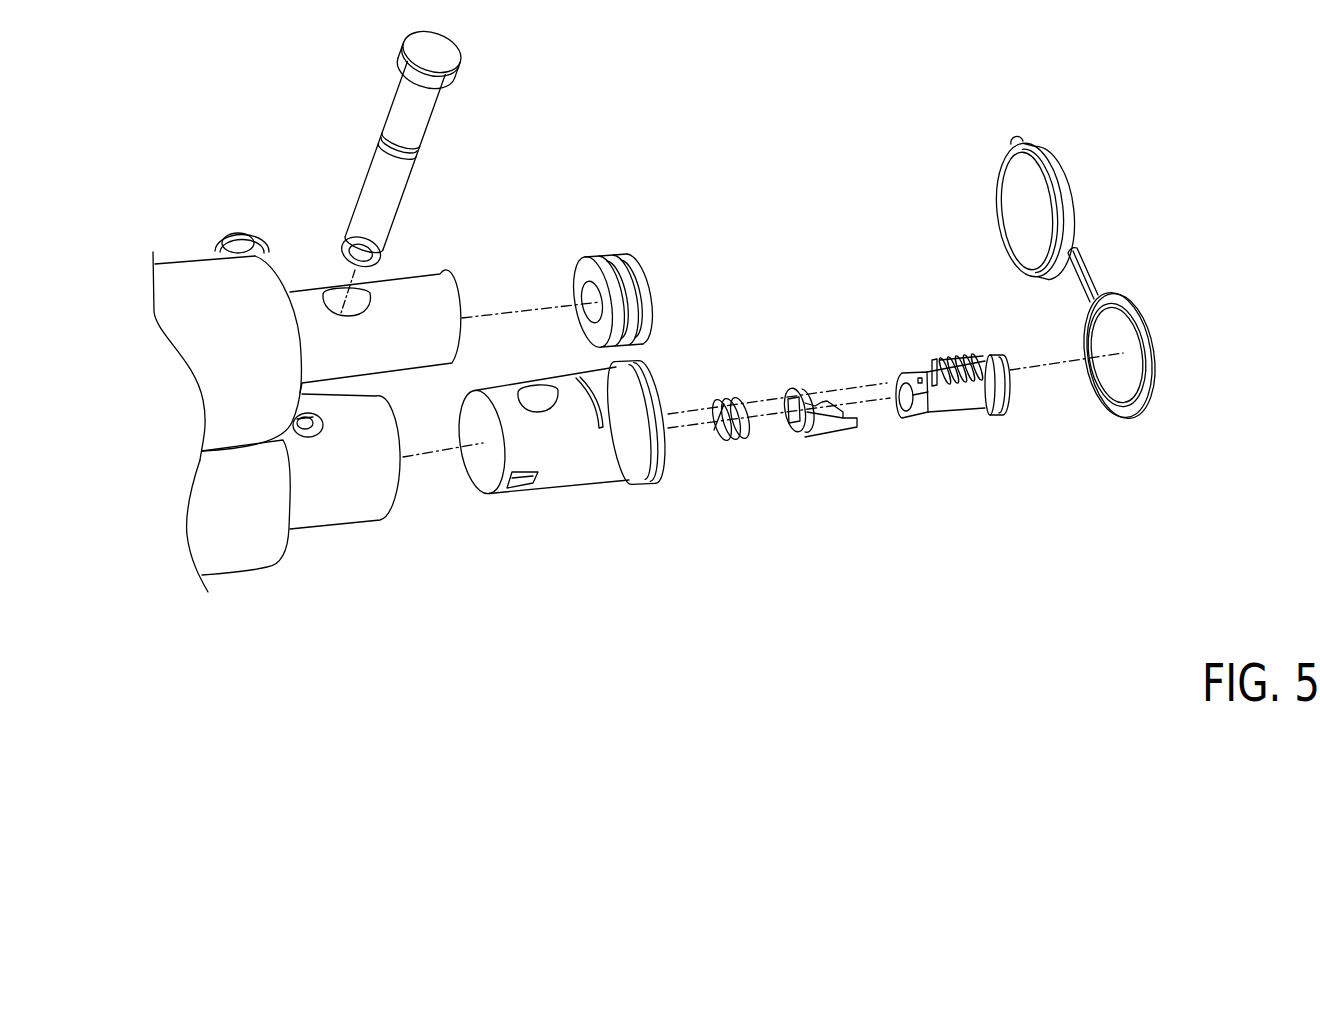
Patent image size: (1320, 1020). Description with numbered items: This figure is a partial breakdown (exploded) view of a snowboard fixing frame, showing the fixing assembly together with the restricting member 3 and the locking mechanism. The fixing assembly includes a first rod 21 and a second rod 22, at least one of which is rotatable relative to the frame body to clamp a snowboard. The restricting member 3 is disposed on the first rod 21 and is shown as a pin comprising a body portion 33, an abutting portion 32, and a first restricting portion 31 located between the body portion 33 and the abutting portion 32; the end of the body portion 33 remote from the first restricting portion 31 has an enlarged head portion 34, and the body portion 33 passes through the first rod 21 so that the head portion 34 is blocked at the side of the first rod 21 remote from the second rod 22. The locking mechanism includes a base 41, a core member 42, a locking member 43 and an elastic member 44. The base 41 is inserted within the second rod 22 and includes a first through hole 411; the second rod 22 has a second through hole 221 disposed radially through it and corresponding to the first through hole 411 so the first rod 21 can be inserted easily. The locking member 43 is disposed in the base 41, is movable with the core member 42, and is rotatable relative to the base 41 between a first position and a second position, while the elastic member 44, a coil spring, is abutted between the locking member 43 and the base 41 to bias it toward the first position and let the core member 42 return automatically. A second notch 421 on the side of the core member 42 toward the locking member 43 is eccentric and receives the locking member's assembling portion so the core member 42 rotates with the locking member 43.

The restricting member 3 is at (470, 148).
The first rod 21 is at (186, 283).
The second rod 22 is at (240, 538).
The second through hole 221 is at (315, 442).
The first restricting portion 31 is at (400, 250).
The abutting portion 32 is at (374, 258).
The body portion 33 is at (392, 175).
The head portion 34 is at (445, 57).
The base 41 is at (671, 509).
The first through hole 411 is at (545, 402).
The core member 42 is at (945, 325).
The second notch 421 is at (912, 412).
The locking member 43 is at (815, 363).
The elastic member 44 is at (749, 437).